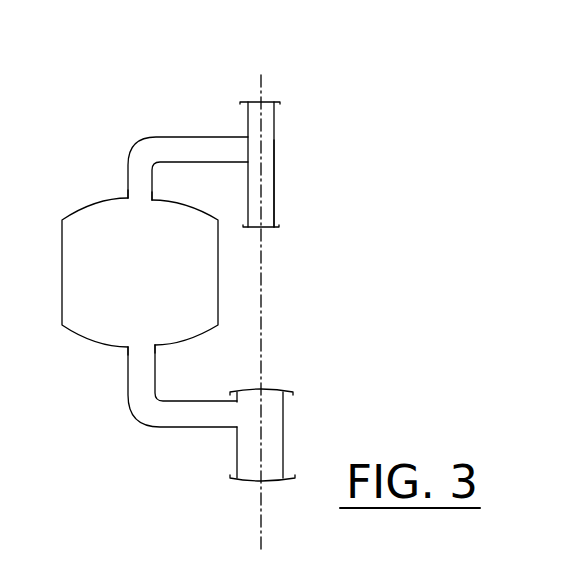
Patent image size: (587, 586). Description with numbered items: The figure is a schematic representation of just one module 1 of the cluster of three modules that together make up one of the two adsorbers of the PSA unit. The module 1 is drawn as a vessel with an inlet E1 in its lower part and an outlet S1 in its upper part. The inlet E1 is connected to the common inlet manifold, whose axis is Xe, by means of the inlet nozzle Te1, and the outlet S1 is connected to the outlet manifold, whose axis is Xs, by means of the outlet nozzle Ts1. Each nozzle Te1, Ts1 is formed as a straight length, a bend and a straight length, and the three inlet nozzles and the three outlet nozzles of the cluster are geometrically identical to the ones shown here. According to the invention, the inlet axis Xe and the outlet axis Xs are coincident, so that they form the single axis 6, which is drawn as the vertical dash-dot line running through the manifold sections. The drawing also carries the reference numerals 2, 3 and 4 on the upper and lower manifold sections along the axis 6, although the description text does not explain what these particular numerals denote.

The module 1 is at (72, 326).
The upper tube 2 is at (275, 120).
The upper tube wall 3 is at (283, 160).
The lower tube 4 is at (283, 428).
The single axis 6 is at (261, 340).
The outlet S1 is at (128, 196).
The inlet E1 is at (158, 350).
The outlet nozzle Ts1 is at (175, 137).
The inlet nozzle Te1 is at (165, 417).
The axis of the outlet manifold Xs is at (273, 92).
The axis of the inlet manifold Xe is at (260, 495).